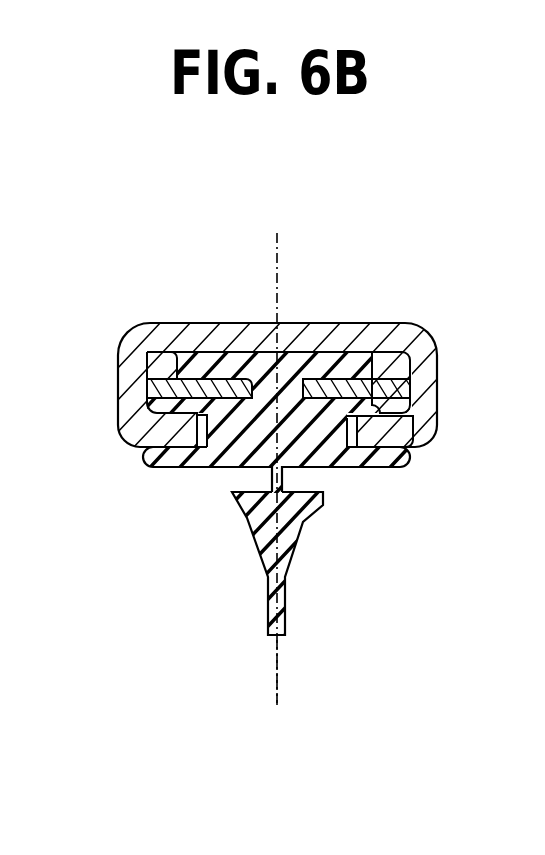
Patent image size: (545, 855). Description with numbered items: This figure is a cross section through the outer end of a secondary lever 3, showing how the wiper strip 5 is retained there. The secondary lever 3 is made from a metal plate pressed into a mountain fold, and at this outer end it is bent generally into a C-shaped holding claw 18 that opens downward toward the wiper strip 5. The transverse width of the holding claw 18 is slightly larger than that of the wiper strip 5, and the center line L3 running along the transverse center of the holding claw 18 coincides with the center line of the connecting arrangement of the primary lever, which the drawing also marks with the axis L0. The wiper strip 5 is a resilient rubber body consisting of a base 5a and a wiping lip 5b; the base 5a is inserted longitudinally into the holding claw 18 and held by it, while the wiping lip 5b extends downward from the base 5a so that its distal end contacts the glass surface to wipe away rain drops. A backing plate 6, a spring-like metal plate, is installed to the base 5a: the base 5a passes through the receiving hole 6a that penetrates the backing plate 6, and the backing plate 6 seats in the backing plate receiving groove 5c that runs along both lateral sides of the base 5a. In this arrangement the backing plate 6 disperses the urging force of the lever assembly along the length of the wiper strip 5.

The secondary lever 3 is at (438, 337).
The wiper strip 5 is at (293, 357).
The base 5a is at (185, 355).
The wiping lip 5b is at (297, 555).
The backing plate receiving groove 5c is at (352, 376).
The backing plate 6 is at (410, 391).
The receiving hole 6a is at (248, 378).
The holding claw 18 is at (340, 355).
The center line of the holding claw L3 is at (278, 262).
The axis line L0 (L1) L0 is at (278, 665).